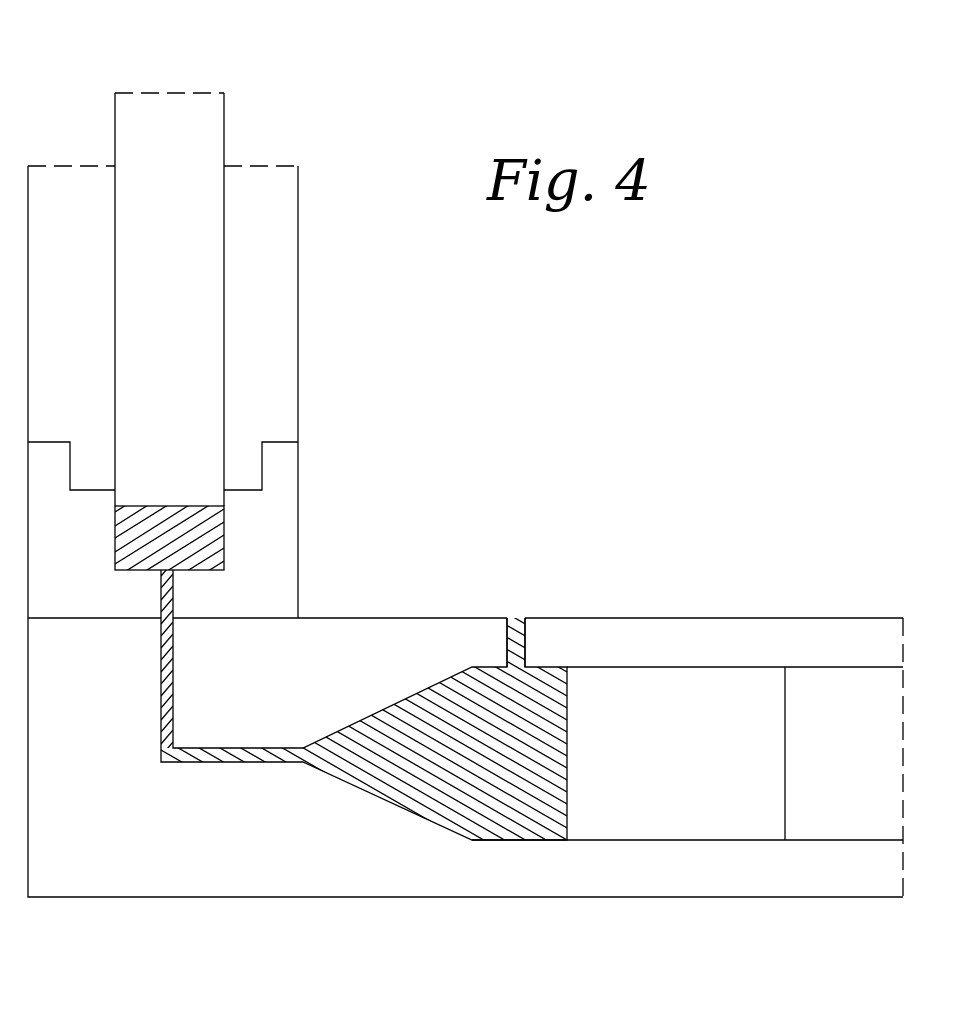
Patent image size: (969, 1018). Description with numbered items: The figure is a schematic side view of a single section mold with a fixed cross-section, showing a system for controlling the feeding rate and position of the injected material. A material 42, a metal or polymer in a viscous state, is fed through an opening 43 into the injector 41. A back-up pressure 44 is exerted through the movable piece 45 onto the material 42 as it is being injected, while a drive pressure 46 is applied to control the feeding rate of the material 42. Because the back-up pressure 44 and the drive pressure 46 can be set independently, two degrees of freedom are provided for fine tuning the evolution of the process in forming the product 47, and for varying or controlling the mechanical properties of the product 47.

The injector 41 is at (510, 841).
The material 42 is at (390, 790).
The opening 43 is at (514, 617).
The back-up pressure 44 is at (149, 78).
The movable piece 45 is at (193, 288).
The drive pressure 46 is at (798, 739).
The product 47 is at (115, 543).